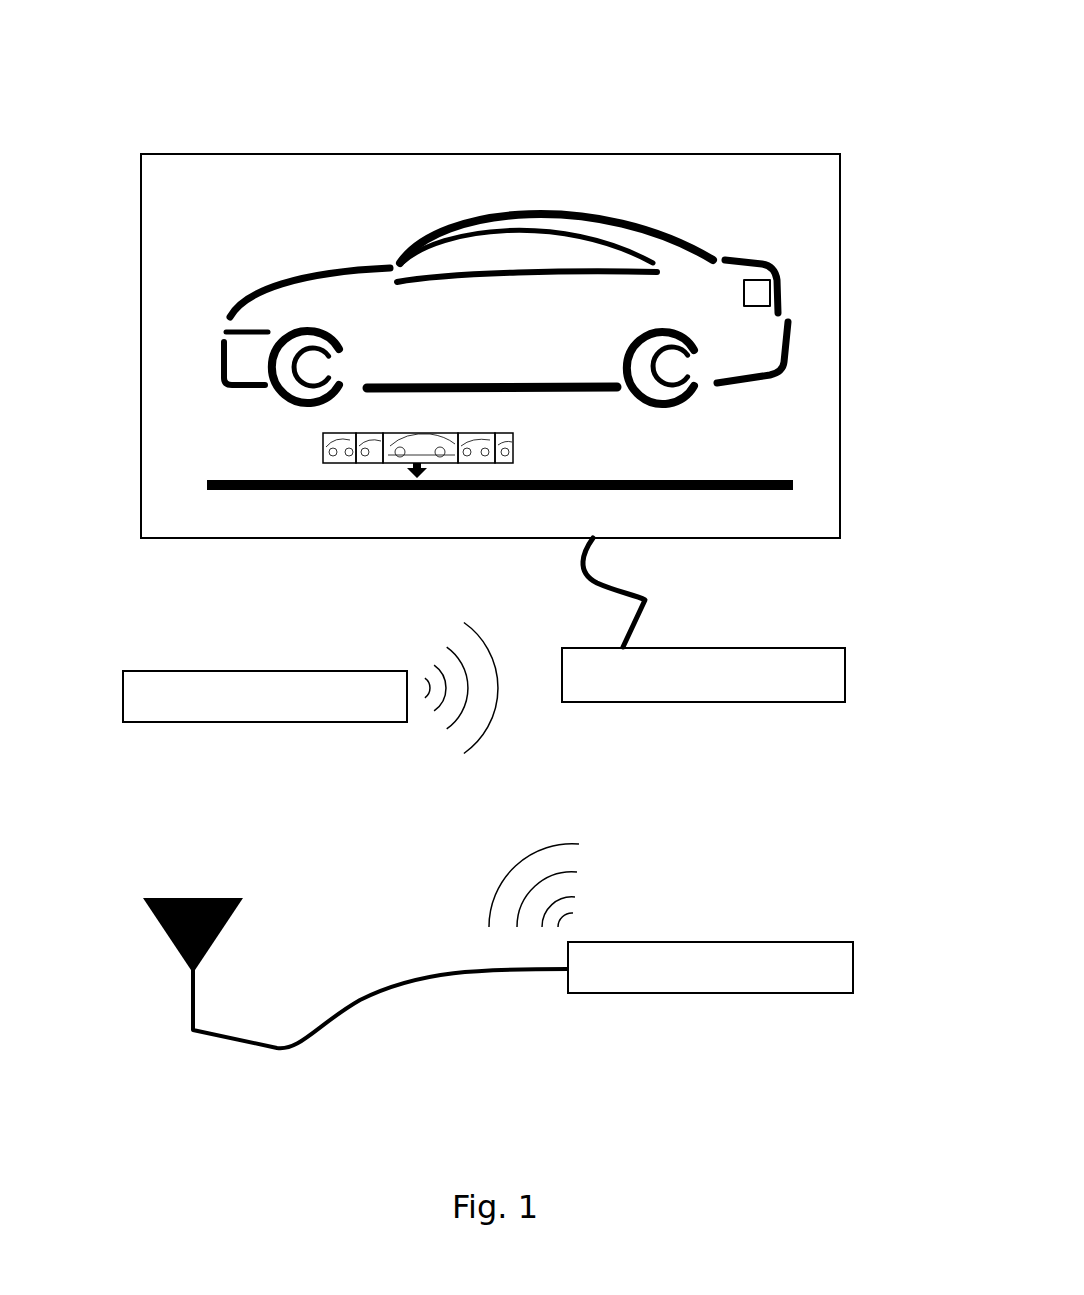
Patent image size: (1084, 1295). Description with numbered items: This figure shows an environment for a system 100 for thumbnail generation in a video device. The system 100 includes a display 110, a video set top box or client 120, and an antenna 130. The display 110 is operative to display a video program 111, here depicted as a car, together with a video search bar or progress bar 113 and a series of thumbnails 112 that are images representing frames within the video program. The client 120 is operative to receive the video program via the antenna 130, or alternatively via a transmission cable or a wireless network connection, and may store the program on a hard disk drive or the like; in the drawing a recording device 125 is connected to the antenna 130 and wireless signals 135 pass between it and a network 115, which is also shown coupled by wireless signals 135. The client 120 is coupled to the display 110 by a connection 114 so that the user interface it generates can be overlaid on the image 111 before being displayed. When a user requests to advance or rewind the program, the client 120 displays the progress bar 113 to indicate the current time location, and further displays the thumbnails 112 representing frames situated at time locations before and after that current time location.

The system 100 is at (525, 56).
The display 110 is at (762, 150).
The video program 111 is at (813, 277).
The thumbnails 112 is at (518, 441).
The progress bar 113 is at (808, 488).
The connection cable 114 is at (648, 600).
The network 115 is at (155, 670).
The video set top box 120 is at (853, 677).
The DVR 125 is at (717, 933).
The antenna 130 is at (245, 899).
The wireless signals 135 is at (447, 730).